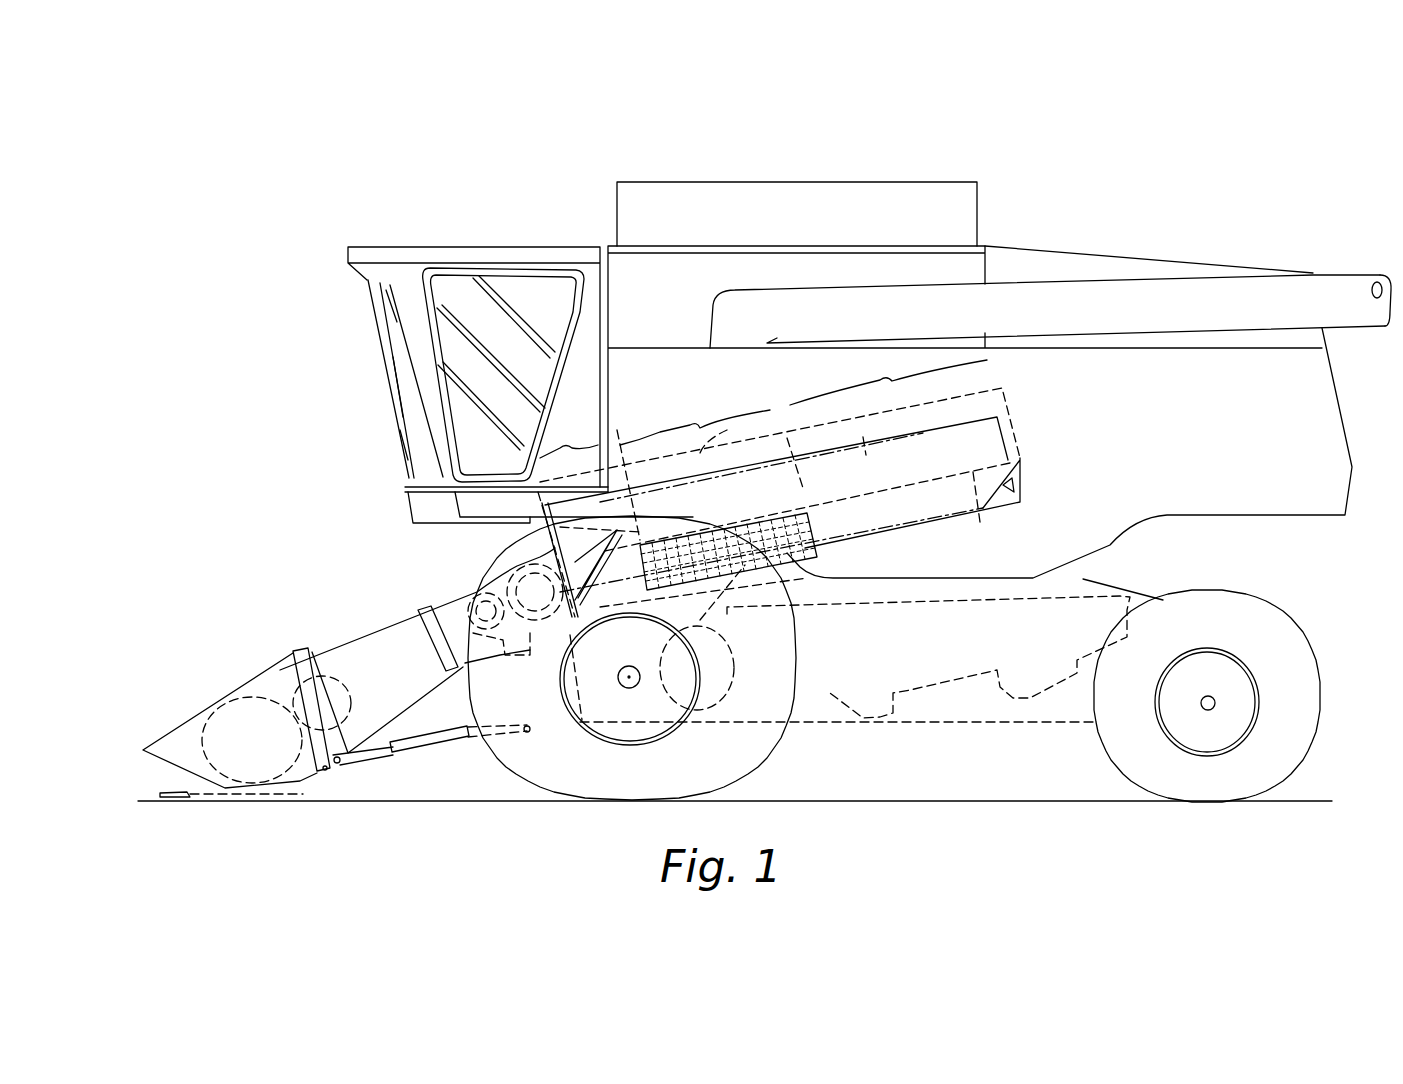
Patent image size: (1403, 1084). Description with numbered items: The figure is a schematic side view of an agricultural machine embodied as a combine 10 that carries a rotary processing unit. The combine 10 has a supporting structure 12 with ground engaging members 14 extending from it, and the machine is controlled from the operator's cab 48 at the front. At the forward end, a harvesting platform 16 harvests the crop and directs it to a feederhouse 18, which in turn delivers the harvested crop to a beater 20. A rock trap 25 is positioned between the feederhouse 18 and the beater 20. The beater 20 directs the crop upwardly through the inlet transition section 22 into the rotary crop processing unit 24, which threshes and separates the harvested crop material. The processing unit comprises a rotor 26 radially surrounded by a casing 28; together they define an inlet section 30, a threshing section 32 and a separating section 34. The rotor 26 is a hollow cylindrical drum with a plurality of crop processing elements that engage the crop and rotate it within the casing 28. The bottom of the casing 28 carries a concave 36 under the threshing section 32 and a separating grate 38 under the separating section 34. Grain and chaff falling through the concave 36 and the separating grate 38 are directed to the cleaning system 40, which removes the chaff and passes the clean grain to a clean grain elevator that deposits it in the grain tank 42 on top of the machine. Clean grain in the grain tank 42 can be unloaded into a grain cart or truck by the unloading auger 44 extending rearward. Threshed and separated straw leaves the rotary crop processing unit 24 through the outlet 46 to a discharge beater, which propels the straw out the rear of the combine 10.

The combine 10 is at (1100, 152).
The supporting structure 12 is at (1087, 578).
The ground engaging members 14 is at (765, 767).
The harvesting platform 16 is at (165, 728).
The feederhouse 18 is at (387, 632).
The beater 20 is at (487, 590).
The inlet transition section 22 is at (537, 552).
The rotary crop processing unit 24 is at (1027, 426).
The rock trap 25 is at (518, 657).
The rotor 26 is at (863, 437).
The casing 28 is at (732, 435).
The inlet section 30 is at (569, 433).
The threshing section 32 is at (711, 440).
The separating section 34 is at (888, 376).
The concave 36 is at (720, 587).
The separating grate 38 is at (923, 530).
The cleaning system 40 is at (908, 690).
The grain tank 42 is at (682, 307).
The unloading auger 44 is at (1212, 315).
The outlet 46 is at (1020, 490).
The operator's cab 48 is at (517, 344).